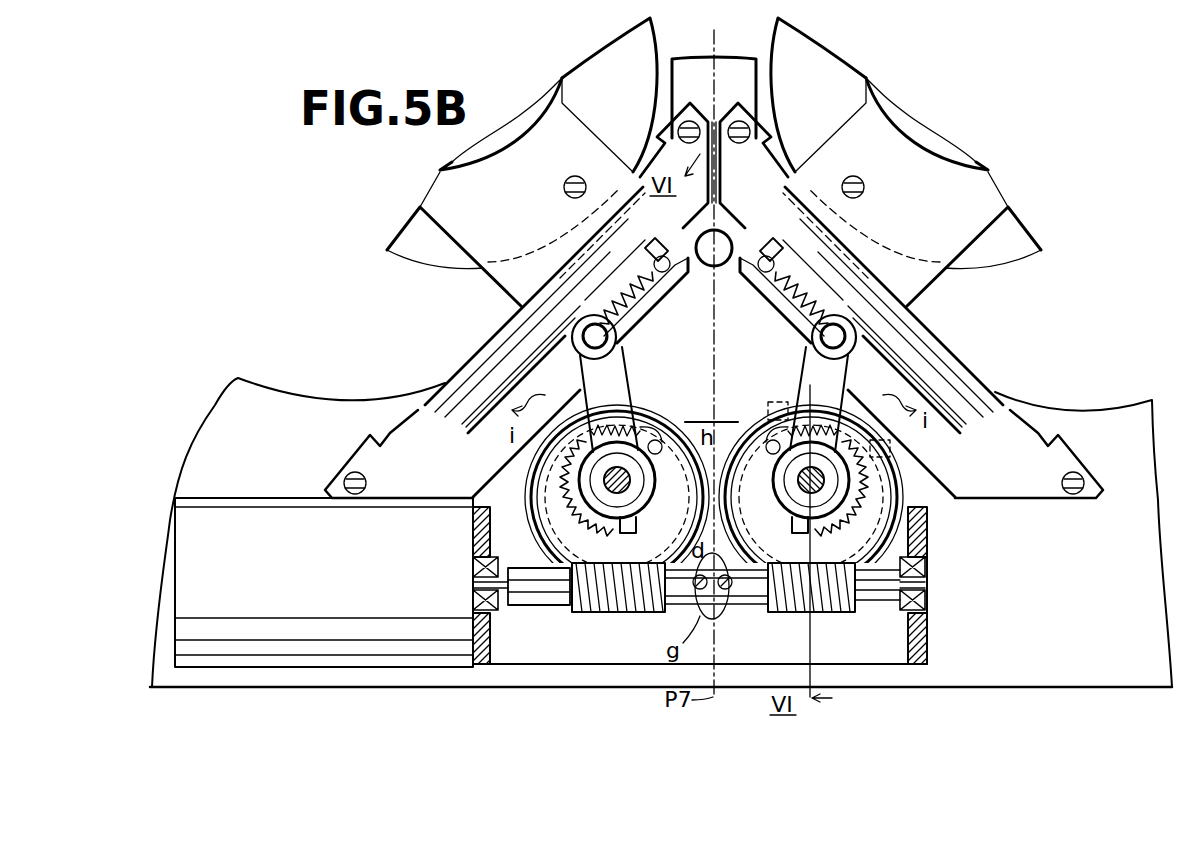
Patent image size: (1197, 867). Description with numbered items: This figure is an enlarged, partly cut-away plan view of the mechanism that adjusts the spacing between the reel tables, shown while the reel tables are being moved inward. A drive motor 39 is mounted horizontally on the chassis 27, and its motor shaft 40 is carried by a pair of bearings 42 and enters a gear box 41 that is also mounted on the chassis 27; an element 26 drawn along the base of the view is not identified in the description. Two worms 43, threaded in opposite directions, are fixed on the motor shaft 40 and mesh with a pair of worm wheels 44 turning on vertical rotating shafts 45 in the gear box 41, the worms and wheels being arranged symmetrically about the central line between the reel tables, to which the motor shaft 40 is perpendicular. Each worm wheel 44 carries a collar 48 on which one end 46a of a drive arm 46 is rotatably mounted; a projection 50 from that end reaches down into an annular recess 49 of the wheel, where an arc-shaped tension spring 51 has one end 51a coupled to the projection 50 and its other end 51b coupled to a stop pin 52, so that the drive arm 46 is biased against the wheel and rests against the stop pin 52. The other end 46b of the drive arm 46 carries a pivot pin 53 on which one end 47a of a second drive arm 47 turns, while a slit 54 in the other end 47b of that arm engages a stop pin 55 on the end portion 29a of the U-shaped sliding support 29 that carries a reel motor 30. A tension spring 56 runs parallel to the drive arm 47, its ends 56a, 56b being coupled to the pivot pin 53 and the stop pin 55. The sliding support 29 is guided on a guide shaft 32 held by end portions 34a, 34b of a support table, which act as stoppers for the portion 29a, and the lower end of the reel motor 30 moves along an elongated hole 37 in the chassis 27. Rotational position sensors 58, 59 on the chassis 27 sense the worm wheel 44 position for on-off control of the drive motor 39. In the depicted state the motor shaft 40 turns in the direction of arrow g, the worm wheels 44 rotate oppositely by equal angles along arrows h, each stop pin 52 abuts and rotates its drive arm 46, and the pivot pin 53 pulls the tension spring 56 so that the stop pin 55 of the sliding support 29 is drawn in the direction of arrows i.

The base plate 26 is at (519, 677).
The chassis 27 is at (622, 683).
The sliding support 29 is at (572, 133).
The end portion of sliding support 29a is at (673, 223).
The reel motor 30 is at (405, 252).
The guide shaft 32 is at (443, 418).
The end portion of support table 34a is at (367, 457).
The end portion of support table 34b is at (740, 106).
The elongated hole 37 is at (266, 380).
The drive motor 39 is at (247, 540).
The motor shaft 40 is at (882, 590).
The gear box 41 is at (558, 662).
The bearing 42 is at (500, 606).
The worm 43 is at (620, 613).
The worm wheel 44 is at (684, 420).
The rotating shaft 45 is at (548, 502).
The drive arm 46 is at (633, 366).
The end of drive arm 46 46a is at (600, 475).
The end of drive arm 46 46b is at (582, 357).
The drive arm 47 is at (655, 298).
The end of drive arm 47 47a is at (620, 350).
The end of drive arm 47 47b is at (720, 266).
The collar 48 is at (552, 465).
The annular recess 49 is at (572, 557).
The projection 50 is at (655, 608).
The tension spring 51 is at (570, 606).
The end of tension spring 51 51a is at (600, 613).
The end of tension spring 51 51b is at (592, 420).
The stop pin 52 is at (657, 440).
The pivot pin 53 is at (537, 300).
The slit 54 is at (662, 244).
The stop pin 55 is at (595, 233).
The tension spring 56 is at (580, 280).
The end of tension spring 56 56a is at (590, 320).
The end of tension spring 56 56b is at (653, 265).
The rotational position sensor 58 is at (772, 400).
The rotational position sensor 59 is at (887, 496).